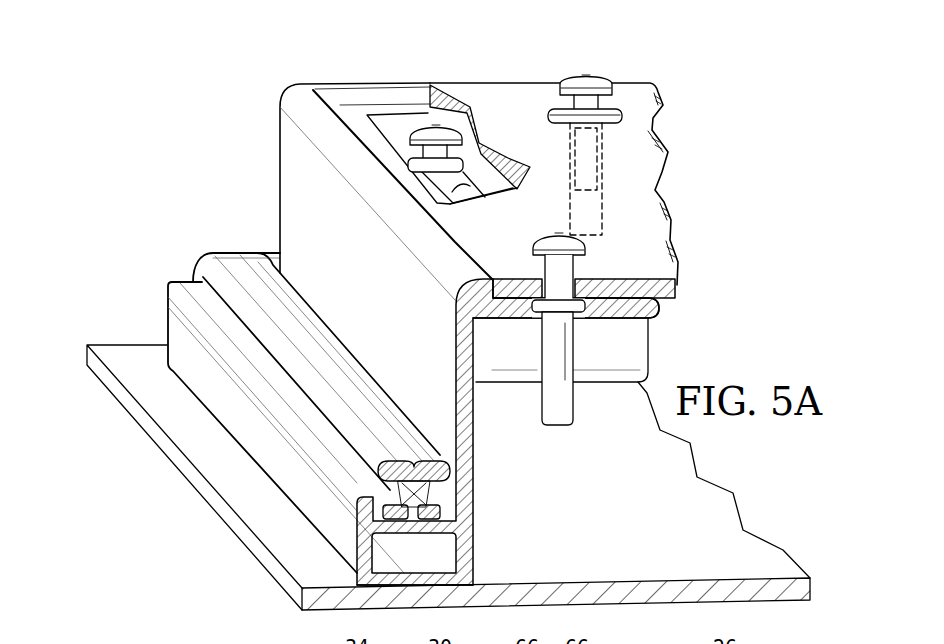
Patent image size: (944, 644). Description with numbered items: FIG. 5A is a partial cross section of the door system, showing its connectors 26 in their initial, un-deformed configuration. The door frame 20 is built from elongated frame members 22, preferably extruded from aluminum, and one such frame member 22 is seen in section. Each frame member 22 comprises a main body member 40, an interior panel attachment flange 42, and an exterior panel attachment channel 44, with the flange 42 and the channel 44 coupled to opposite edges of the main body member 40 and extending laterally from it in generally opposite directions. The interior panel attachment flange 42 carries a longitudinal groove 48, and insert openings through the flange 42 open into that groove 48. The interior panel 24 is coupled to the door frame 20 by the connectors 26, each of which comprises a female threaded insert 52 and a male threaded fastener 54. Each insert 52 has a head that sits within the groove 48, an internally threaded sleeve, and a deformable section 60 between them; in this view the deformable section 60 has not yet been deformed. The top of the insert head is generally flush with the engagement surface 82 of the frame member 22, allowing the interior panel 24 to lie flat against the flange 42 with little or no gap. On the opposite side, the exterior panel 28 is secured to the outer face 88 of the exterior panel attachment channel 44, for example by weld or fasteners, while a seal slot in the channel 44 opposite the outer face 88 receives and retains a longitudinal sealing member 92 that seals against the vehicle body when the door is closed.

The door frame 20 is at (203, 110).
The frame member 22 is at (270, 178).
The interior panel 24 is at (637, 113).
The connector 26 is at (404, 115).
The exterior panel 28 is at (198, 438).
The main body member 40 is at (335, 238).
The interior panel attachment flange 42 is at (633, 314).
The exterior panel attachment channel 44 is at (188, 340).
The longitudinal groove 48 is at (462, 186).
The female threaded insert 52 is at (458, 158).
The male threaded fastener 54 is at (581, 76).
The deformable section 60 is at (590, 162).
The engagement surface 82 is at (352, 115).
The outer face 88 is at (445, 592).
The longitudinal sealing member 92 is at (207, 276).